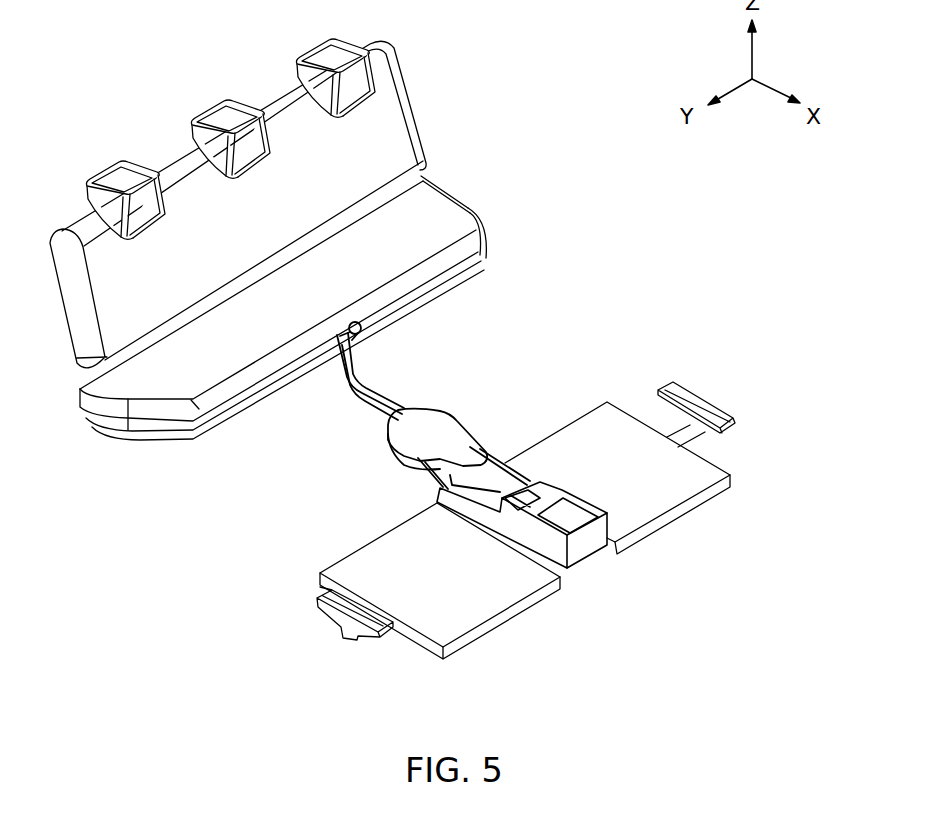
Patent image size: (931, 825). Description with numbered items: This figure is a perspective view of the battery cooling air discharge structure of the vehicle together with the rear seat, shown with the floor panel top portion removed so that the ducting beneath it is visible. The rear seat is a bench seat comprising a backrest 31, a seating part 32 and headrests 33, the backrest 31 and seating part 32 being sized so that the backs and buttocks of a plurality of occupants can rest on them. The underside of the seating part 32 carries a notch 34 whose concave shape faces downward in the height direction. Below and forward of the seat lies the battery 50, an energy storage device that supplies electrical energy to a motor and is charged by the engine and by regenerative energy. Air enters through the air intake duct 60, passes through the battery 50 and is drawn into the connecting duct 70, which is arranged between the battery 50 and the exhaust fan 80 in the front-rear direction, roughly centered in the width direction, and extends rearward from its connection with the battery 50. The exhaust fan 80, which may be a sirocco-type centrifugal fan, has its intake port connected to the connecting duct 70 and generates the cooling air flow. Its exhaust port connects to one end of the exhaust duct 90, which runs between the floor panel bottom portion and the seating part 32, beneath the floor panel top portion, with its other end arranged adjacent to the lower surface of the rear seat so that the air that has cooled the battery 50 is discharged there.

The backrest 31 is at (373, 127).
The seating part 32 is at (420, 212).
The headrests 33 is at (347, 82).
The notch 34 is at (363, 330).
The battery 50 is at (583, 448).
The air intake duct 60 is at (707, 402).
The connecting duct 70 is at (478, 445).
The exhaust fan 80 is at (388, 448).
The exhaust duct 90 is at (380, 387).